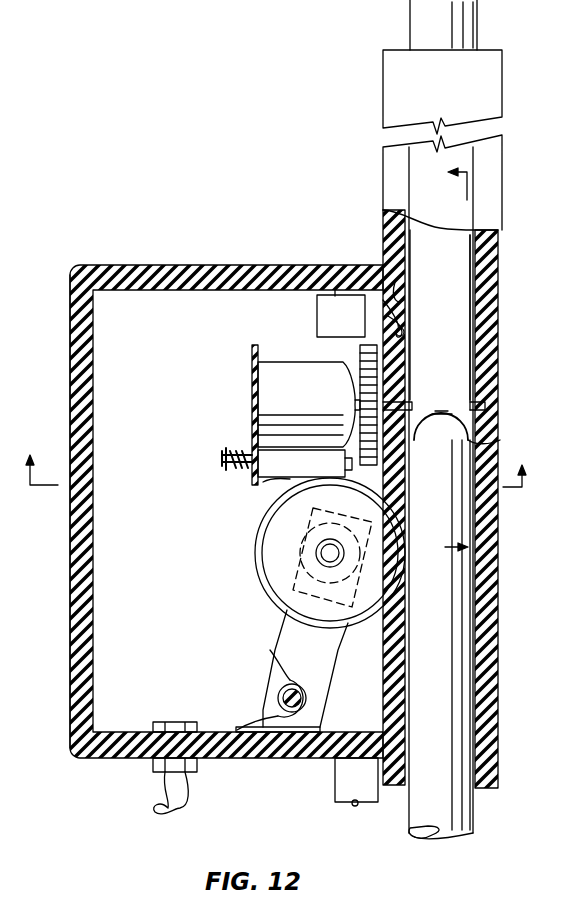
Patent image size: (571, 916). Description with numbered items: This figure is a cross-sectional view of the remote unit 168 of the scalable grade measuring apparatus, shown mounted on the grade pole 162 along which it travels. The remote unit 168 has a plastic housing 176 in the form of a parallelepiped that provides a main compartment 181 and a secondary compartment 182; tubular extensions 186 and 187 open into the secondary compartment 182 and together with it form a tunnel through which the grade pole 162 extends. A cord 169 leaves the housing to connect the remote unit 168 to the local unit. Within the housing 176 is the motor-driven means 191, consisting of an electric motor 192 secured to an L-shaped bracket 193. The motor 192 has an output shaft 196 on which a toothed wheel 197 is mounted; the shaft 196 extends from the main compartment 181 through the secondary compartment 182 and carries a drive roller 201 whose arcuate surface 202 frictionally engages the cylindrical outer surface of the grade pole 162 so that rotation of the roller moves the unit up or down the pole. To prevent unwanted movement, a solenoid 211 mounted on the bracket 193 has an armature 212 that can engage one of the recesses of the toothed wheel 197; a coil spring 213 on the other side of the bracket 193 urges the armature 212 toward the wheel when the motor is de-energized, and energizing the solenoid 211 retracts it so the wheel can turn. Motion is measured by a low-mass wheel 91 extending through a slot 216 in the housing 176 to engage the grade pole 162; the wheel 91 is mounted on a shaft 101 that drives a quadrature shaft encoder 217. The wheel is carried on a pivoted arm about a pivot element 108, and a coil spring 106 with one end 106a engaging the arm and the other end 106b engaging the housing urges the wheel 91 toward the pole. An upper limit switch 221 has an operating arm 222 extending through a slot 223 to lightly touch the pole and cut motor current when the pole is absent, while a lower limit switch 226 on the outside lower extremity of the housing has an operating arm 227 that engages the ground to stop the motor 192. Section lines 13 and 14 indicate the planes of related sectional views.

The grade pole 162 is at (421, 25).
The tubular extension 187 is at (384, 85).
The section line 14 is at (459, 359).
The section line 13 is at (289, 456).
The remote unit 168 is at (92, 222).
The housing 176 is at (210, 264).
The main compartment 181 is at (98, 706).
The tubular extension 186 is at (495, 760).
The secondary compartment 182 is at (472, 312).
The arcuate surface 202 is at (440, 398).
The output shaft 196 is at (477, 395).
The drive roller 201 is at (470, 438).
The upper limit switch 221 is at (345, 306).
The toothed wheel 197 is at (355, 350).
The operating arm 222 is at (414, 302).
The slot 223 is at (408, 290).
The motor-driven means 191 is at (262, 332).
The L-shaped bracket 193 is at (252, 368).
The electric motor 192 is at (316, 407).
The coil spring 213 is at (243, 450).
The armature 212 is at (388, 482).
The solenoid 211 is at (263, 482).
The wheel 91 is at (278, 573).
The shaft 101 is at (318, 552).
The quadrature shaft encoder 217 is at (282, 527).
The slot 216 is at (404, 596).
The pivot pin 108 is at (272, 670).
The coil spring 106 is at (262, 690).
The spring end 106a is at (270, 650).
The spring end 106b is at (257, 762).
The cord 169 is at (157, 768).
The lower limit switch 226 is at (365, 790).
The operating arm 227 is at (352, 805).